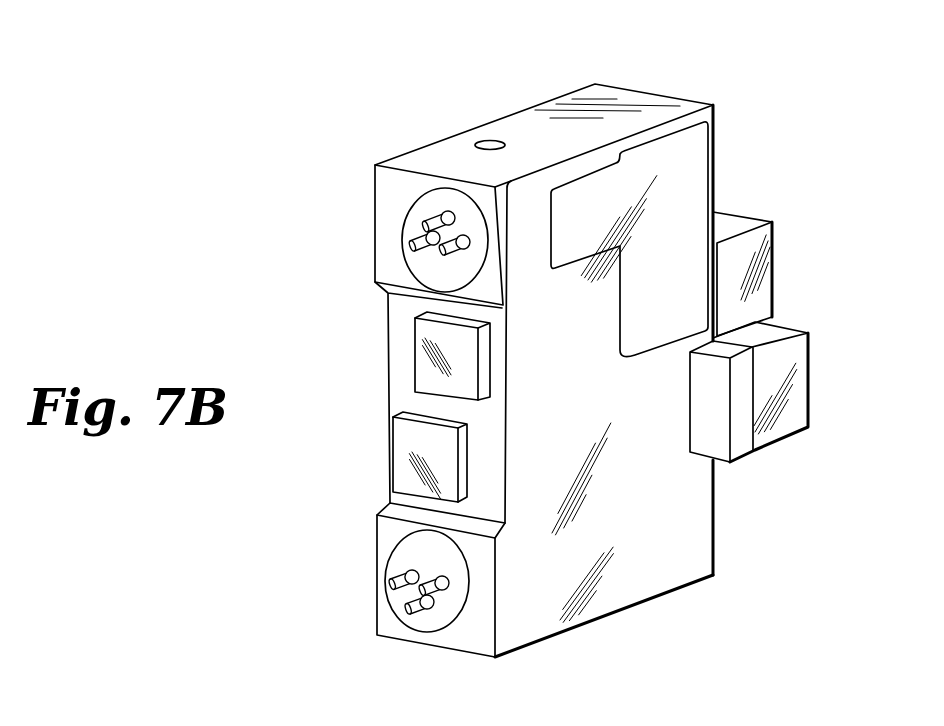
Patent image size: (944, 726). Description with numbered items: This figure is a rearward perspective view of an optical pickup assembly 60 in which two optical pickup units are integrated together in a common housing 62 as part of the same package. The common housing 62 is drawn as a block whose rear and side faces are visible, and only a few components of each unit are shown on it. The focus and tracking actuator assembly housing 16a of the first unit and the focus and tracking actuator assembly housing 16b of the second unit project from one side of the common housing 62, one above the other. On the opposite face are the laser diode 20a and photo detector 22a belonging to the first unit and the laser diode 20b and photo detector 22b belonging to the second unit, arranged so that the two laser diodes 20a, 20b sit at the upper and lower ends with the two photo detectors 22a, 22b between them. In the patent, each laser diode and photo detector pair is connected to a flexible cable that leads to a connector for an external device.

The optical pickup assembly 60 is at (703, 64).
The common housing 62 is at (625, 535).
The laser diode 20a is at (442, 270).
The laser diode 20b is at (422, 551).
The photo detector 22a is at (443, 352).
The photo detector 22b is at (432, 462).
The focus and tracking actuator assembly housing 16a is at (740, 258).
The focus and tracking actuator assembly housing 16b is at (778, 372).